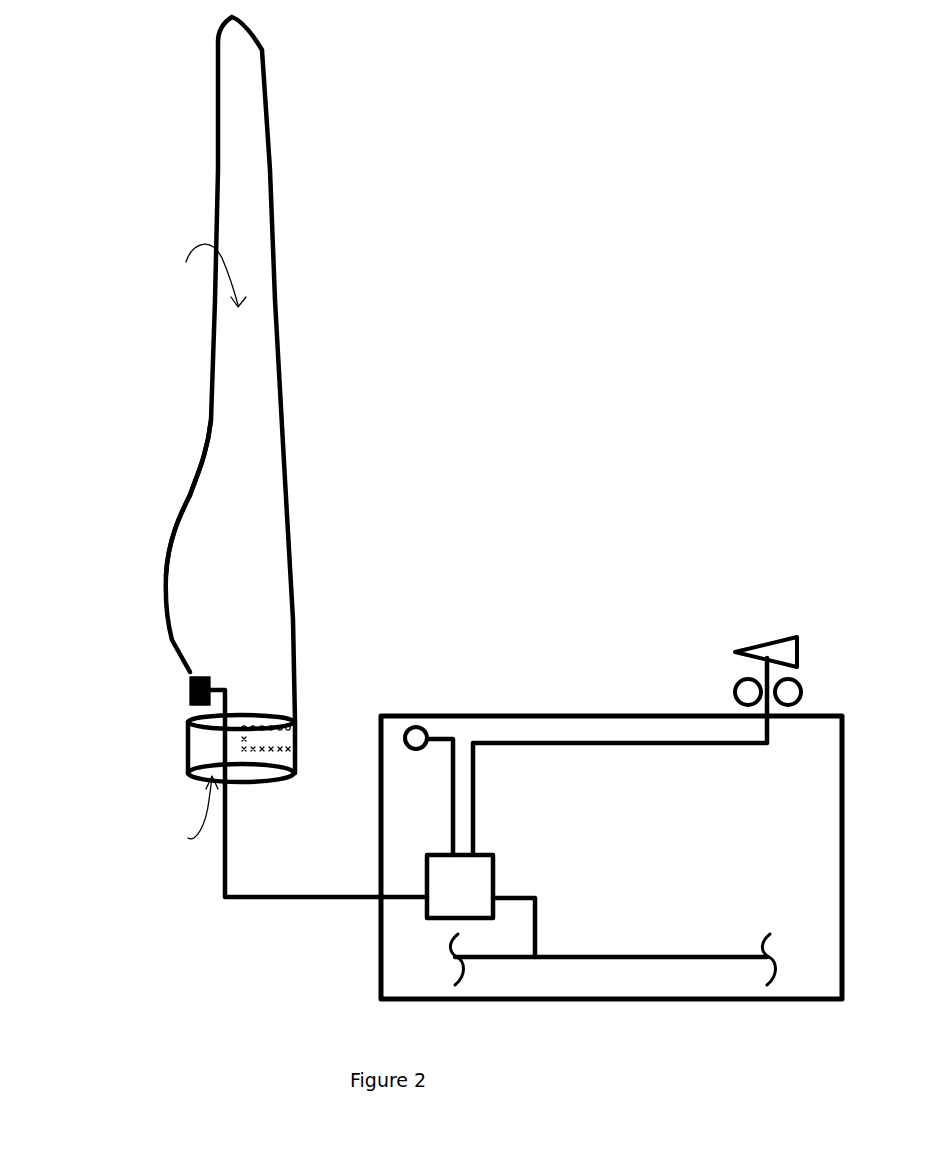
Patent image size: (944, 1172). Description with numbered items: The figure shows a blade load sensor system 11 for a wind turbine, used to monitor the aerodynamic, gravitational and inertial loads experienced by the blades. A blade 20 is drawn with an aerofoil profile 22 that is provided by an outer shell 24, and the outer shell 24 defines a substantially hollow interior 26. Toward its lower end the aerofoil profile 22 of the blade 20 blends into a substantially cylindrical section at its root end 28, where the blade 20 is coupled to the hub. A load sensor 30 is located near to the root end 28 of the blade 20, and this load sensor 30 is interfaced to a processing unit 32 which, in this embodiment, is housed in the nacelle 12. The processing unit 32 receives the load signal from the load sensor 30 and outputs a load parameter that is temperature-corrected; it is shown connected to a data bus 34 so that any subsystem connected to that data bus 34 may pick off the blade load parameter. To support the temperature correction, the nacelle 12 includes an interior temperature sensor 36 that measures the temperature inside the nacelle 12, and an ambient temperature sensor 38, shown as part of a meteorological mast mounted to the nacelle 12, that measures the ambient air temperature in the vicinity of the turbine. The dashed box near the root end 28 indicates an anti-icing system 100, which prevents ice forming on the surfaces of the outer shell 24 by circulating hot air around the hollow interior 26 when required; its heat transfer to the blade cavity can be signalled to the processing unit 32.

The blade load sensor system 11 is at (146, 1012).
The nacelle 12 is at (589, 714).
The blade 20 is at (235, 170).
The aerofoil profile 22 is at (207, 275).
The outer shell 24 is at (199, 492).
The hollow interior 26 is at (186, 807).
The root end 28 is at (188, 752).
The load sensor 30 is at (192, 688).
The processing unit 32 is at (452, 897).
The data bus 34 is at (653, 960).
The interior temperature sensor 36 is at (418, 735).
The ambient temperature sensor 38 is at (748, 633).
The anti-icing system 100 is at (270, 750).